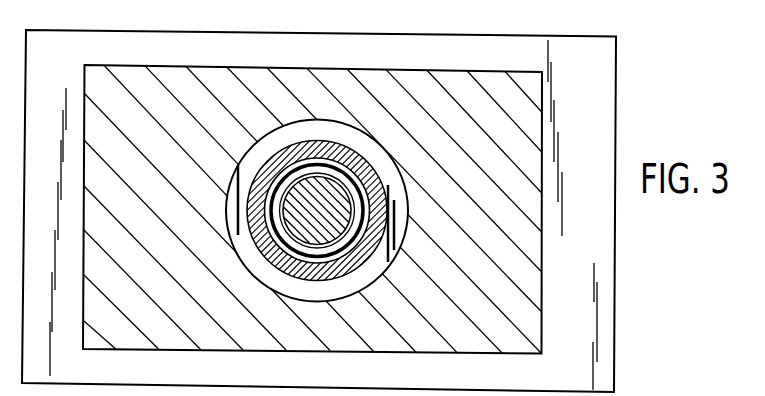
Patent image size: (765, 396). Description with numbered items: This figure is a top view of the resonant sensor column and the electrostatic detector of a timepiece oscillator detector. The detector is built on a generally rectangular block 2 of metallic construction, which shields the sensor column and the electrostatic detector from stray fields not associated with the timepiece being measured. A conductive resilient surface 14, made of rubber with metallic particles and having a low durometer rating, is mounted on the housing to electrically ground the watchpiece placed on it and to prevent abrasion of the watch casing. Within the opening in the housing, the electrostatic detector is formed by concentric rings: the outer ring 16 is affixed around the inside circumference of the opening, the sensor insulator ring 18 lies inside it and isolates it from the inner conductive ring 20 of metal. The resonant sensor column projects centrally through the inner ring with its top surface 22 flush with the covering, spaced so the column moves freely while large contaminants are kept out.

The block 2 is at (615, 318).
The conductive resilient surface 14 is at (542, 288).
The outer ring 16 is at (226, 222).
The sensor insulator ring 18 is at (353, 157).
The inner conductive ring 20 is at (331, 258).
The top surface of resonant sensor column 22 is at (324, 181).